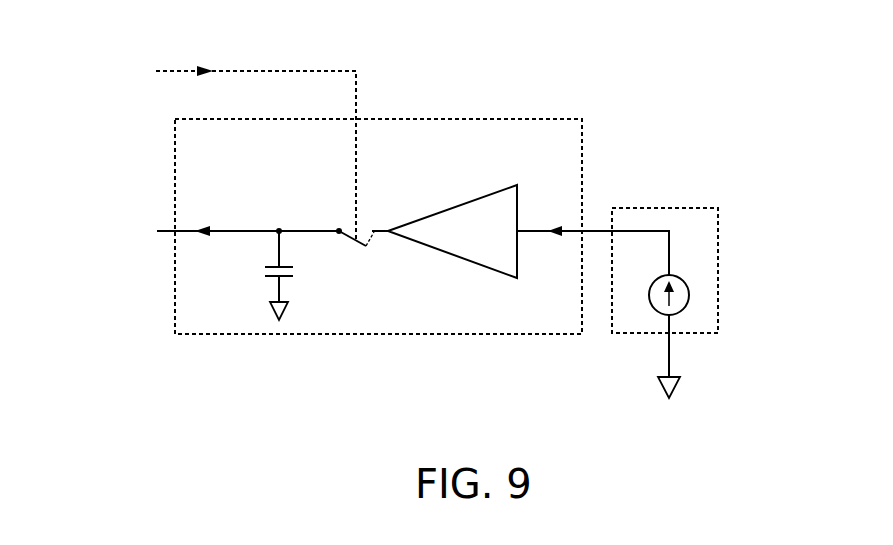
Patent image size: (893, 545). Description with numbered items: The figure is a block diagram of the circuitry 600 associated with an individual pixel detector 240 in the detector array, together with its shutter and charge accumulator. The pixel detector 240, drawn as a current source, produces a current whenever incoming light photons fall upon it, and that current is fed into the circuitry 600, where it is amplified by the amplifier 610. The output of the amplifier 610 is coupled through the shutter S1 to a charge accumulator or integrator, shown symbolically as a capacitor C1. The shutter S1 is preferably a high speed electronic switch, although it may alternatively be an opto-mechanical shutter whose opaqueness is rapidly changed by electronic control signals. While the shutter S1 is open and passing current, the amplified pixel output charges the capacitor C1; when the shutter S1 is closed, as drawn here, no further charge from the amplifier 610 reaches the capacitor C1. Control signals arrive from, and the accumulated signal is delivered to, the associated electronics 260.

The electronics/processing circuitry 260 is at (209, 163).
The shutter and charge accumulator or integrator circuit 600 is at (413, 334).
The amplifier 610 is at (497, 244).
The pixel detector 240 is at (642, 207).
The capacitor C1 is at (270, 283).
The shutter S1 is at (352, 247).